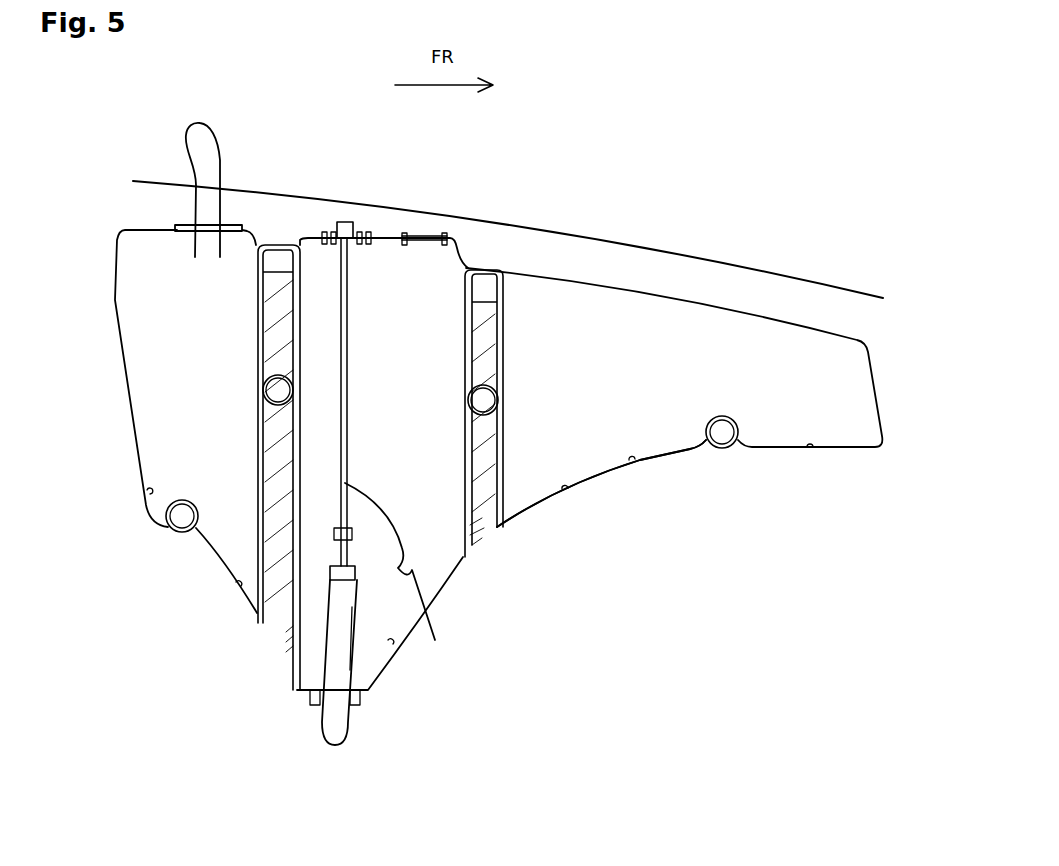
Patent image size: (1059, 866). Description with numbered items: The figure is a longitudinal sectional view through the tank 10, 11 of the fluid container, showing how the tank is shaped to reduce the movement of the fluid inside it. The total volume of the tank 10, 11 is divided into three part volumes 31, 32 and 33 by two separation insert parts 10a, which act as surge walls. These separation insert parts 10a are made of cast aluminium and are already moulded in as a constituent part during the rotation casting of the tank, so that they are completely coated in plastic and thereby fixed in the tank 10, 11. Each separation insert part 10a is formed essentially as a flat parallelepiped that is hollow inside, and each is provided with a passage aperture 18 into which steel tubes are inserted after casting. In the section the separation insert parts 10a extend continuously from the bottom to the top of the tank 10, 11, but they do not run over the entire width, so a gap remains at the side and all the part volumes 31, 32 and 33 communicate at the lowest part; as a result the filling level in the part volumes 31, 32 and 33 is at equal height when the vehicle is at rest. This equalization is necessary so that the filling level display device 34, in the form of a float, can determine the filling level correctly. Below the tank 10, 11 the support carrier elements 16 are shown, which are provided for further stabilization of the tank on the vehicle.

The first tank 10 is at (594, 493).
The second tank 11 is at (609, 515).
The separation insert part 10a is at (277, 613).
The support carrier element 16 is at (178, 520).
The passage aperture 18 is at (272, 388).
The part volume 31 is at (157, 340).
The part volume 32 is at (400, 277).
The part volume 33 is at (690, 333).
The filling level display device 34 is at (329, 594).